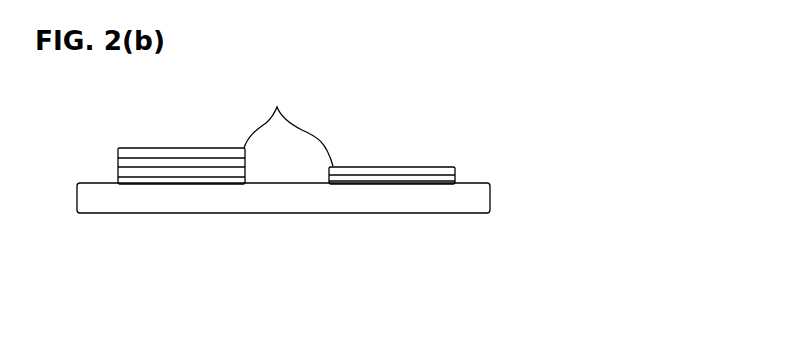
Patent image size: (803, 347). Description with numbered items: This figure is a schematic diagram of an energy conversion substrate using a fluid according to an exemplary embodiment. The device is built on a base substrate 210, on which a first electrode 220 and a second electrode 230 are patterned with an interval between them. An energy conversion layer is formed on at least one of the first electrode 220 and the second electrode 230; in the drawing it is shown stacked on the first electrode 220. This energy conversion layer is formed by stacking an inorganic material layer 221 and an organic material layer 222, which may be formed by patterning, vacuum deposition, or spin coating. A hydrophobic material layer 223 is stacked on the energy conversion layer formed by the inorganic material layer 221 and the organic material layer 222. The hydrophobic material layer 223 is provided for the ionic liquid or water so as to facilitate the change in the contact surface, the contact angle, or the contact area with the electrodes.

The base substrate 210 is at (290, 202).
The first electrode 220 is at (172, 184).
The inorganic material layer 221 is at (118, 172).
The organic material layer 222 is at (120, 157).
The hydrophobic material layer 223 is at (288, 125).
The second electrode 230 is at (392, 181).